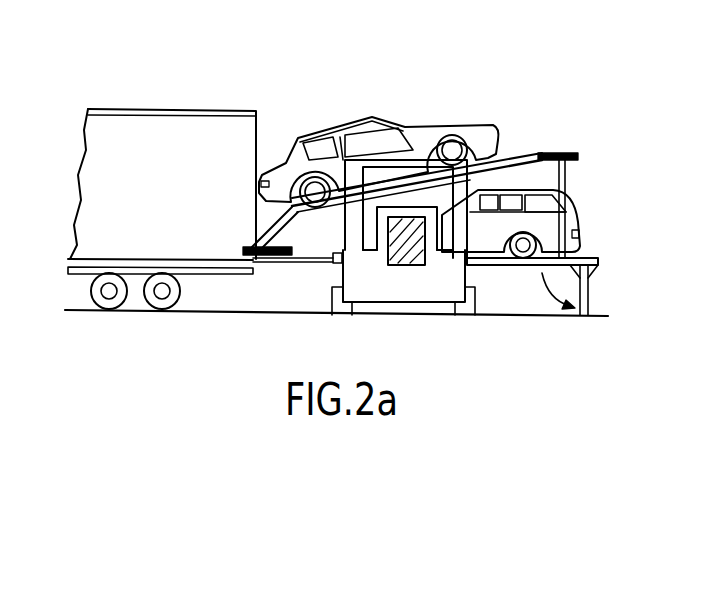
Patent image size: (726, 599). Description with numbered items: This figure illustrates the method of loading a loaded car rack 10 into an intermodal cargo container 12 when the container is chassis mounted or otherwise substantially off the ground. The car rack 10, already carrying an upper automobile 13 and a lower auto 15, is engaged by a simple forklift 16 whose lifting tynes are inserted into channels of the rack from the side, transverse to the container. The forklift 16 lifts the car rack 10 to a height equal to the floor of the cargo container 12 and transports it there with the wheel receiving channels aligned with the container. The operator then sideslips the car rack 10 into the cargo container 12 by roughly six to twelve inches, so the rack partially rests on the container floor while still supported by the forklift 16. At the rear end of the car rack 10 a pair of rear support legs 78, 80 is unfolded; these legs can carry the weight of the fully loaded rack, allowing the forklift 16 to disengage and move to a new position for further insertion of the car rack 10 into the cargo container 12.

The car rack 10 is at (560, 153).
The cargo container 12 is at (229, 111).
The automobile 13 is at (417, 127).
The lower auto 15 is at (575, 208).
The forklift 16 is at (420, 293).
The rear support leg 78 is at (588, 302).
The rear support leg 80 is at (588, 302).